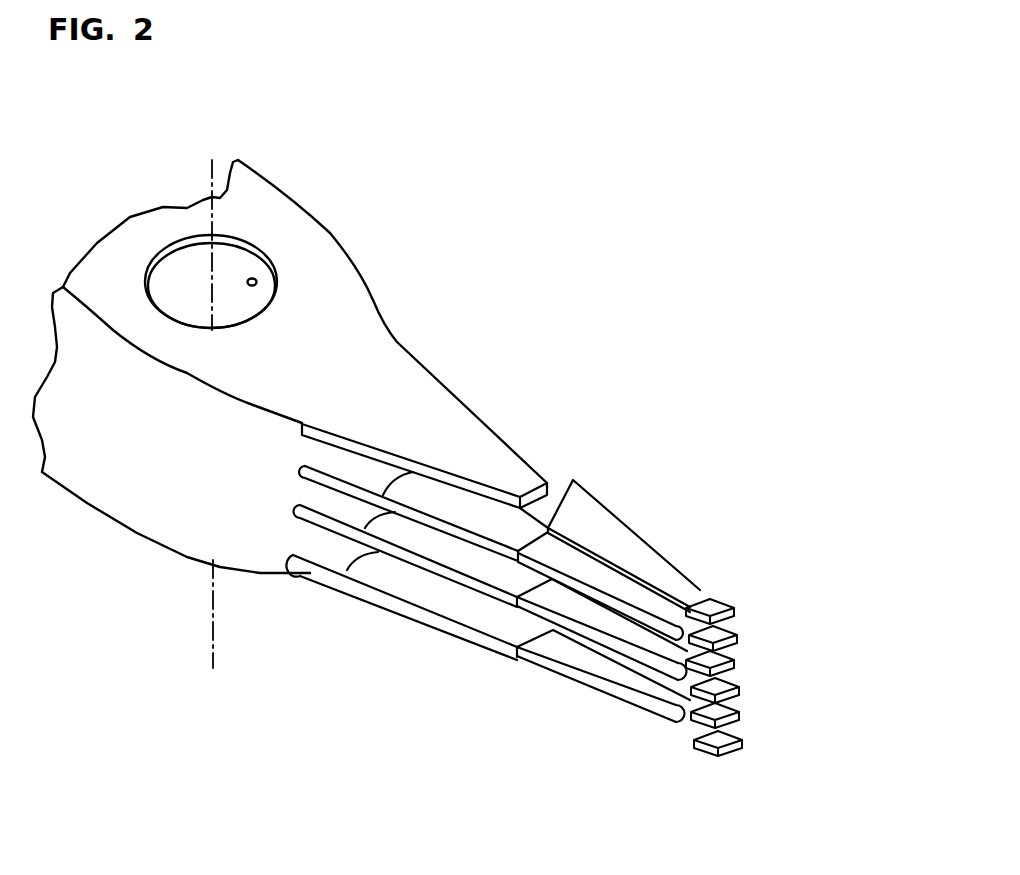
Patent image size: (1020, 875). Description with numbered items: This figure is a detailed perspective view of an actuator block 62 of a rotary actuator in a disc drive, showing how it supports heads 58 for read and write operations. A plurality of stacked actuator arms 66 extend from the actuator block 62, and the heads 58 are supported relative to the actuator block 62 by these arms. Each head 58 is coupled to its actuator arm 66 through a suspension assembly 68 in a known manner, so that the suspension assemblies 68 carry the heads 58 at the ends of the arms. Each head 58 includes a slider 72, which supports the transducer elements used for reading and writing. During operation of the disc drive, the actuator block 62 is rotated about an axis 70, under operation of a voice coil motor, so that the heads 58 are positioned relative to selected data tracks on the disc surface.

The heads 58 is at (707, 675).
The actuator block 62 is at (323, 286).
The actuator arms 66 is at (515, 475).
The suspension assemblies 68 is at (622, 678).
The axis 70 is at (210, 175).
The slider 72 is at (745, 603).